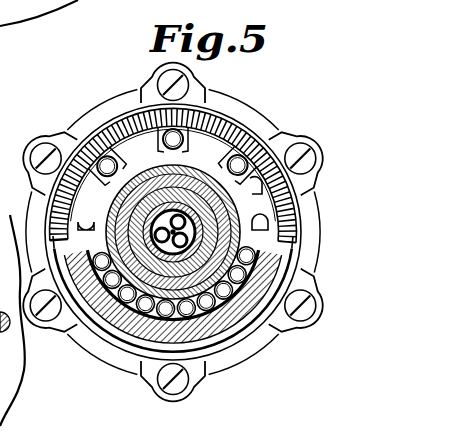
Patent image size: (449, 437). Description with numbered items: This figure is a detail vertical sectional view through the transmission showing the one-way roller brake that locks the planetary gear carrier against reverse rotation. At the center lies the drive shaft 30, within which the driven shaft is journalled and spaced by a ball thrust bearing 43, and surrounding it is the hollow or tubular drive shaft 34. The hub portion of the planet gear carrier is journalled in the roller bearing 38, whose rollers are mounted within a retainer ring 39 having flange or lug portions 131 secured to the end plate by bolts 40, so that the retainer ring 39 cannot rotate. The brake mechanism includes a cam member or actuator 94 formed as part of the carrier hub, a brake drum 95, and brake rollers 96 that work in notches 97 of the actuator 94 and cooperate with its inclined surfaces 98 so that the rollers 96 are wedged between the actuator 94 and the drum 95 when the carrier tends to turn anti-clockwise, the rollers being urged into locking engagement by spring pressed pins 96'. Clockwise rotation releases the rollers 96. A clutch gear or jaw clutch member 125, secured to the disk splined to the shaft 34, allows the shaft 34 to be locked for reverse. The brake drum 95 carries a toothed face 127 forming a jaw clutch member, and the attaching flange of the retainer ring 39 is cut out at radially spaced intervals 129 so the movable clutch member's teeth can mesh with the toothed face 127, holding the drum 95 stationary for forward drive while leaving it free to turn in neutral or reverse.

The drive shaft 30 is at (304, 265).
The hollow or tubular drive shaft 34 is at (258, 323).
The roller bearing 38 is at (122, 322).
The retainer ring 39 is at (136, 305).
The bolts 40 is at (196, 72).
The ball thrust bearing 43 is at (140, 218).
The cam member or actuator 94 is at (229, 131).
The brake drum 95 is at (219, 113).
The brake members or rollers 96 is at (232, 145).
The spring pressed pins 96' is at (123, 163).
The notches 97 is at (266, 190).
The inclined surfaces 98 is at (254, 182).
The clutch gear or jaw clutch member 125 is at (116, 322).
The toothed face 127 is at (320, 214).
The cut out 129 is at (80, 130).
The flange or lug portions 131 is at (61, 139).